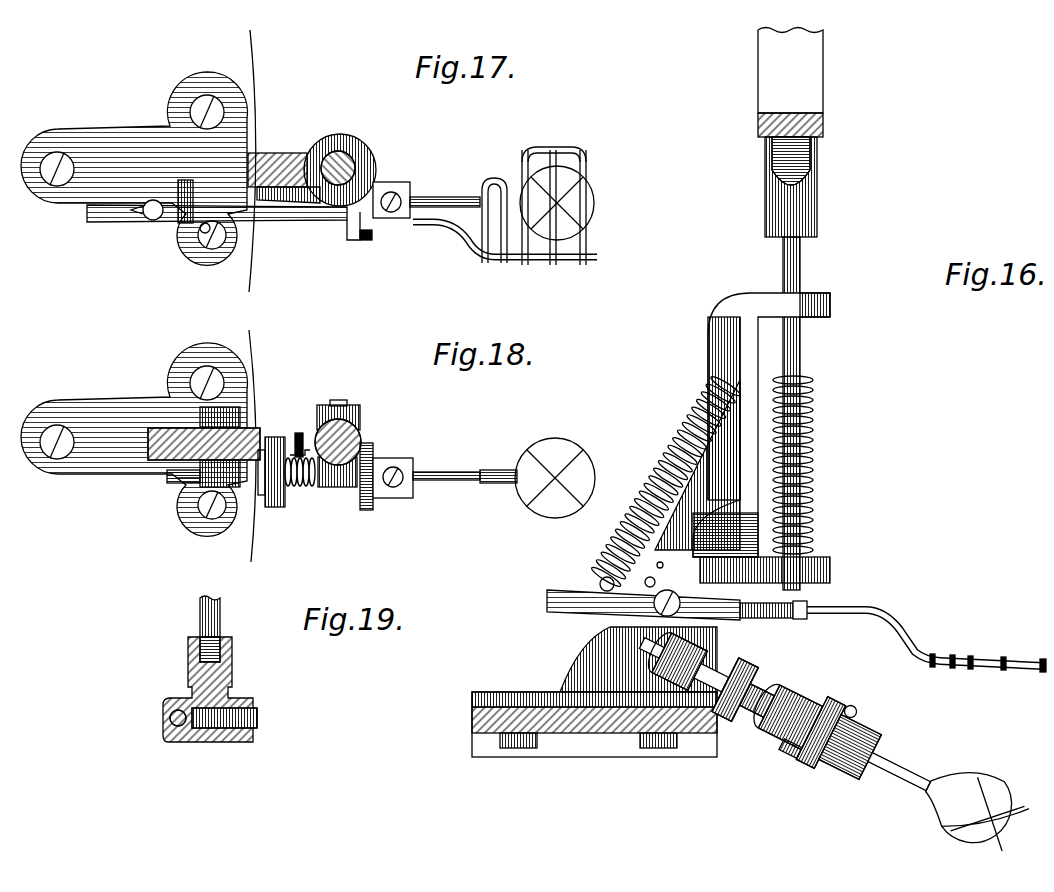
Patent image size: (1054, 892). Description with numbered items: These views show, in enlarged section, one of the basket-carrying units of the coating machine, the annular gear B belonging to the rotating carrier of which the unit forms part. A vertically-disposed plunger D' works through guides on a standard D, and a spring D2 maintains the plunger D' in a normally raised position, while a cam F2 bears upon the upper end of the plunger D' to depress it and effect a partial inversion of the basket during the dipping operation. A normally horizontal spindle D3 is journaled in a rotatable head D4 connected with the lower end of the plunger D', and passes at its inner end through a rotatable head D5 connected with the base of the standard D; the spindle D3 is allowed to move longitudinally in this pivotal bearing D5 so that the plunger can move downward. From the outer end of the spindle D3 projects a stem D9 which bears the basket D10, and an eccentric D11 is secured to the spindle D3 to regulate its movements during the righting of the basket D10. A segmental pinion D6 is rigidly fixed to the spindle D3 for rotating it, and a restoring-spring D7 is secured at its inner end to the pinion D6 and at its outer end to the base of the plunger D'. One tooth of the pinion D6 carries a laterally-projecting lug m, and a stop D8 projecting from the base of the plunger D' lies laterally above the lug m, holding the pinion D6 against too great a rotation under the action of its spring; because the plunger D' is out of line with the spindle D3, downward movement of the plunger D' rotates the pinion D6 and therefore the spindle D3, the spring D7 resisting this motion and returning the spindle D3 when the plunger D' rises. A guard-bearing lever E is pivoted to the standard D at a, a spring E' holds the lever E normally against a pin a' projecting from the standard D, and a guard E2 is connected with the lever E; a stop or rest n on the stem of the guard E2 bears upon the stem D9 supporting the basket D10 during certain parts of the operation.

In FIG. 17, the annular gear carrier B is at (256, 62).
In FIG. 18, the annular gear carrier B is at (185, 500).
In FIG. 17, the standard D is at (212, 251).
In FIG. 18, the standard D is at (170, 476).
In FIG. 16, the standard D is at (751, 425).
In FIG. 18, the plunger D' is at (359, 436).
In FIG. 19, the plunger D' is at (235, 618).
In FIG. 16, the plunger D' is at (811, 413).
In FIG. 16, the spring D2 is at (814, 428).
In FIG. 18, the spindle D3 is at (170, 460).
In FIG. 19, the spindle D3 is at (175, 713).
In FIG. 16, the spindle D3 is at (748, 661).
In FIG. 18, the rotatable head D4 is at (342, 405).
In FIG. 19, the rotatable head D4 is at (170, 730).
In FIG. 16, the rotatable head D4 is at (772, 742).
In FIG. 18, the rotatable head D5 is at (232, 490).
In FIG. 16, the rotatable head D5 is at (651, 666).
In FIG. 18, the segmental pinion D6 is at (275, 508).
In FIG. 16, the segmental pinion D6 is at (736, 715).
In FIG. 18, the restoring-spring D7 is at (300, 488).
In FIG. 18, the stop D8 is at (305, 448).
In FIG. 17, the stem D9 is at (414, 198).
In FIG. 16, the stem D9 is at (885, 749).
In FIG. 17, the basket D10 is at (592, 200).
In FIG. 18, the basket D10 is at (565, 441).
In FIG. 16, the basket D10 is at (983, 794).
In FIG. 16, the eccentric D11 is at (847, 720).
In FIG. 17, the guard-bearing lever E is at (217, 234).
In FIG. 16, the guard-bearing lever E is at (662, 504).
In FIG. 17, the spring E' is at (152, 222).
In FIG. 17, the guard E2 is at (556, 158).
In FIG. 16, the cam F2 is at (824, 125).
In FIG. 17, the pivot a is at (193, 251).
In FIG. 16, the pivot a is at (665, 577).
In FIG. 17, the pin a' is at (149, 233).
In FIG. 16, the pin a' is at (672, 551).
In FIG. 18, the lug m is at (298, 436).
In FIG. 17, the stop or rest n is at (496, 182).